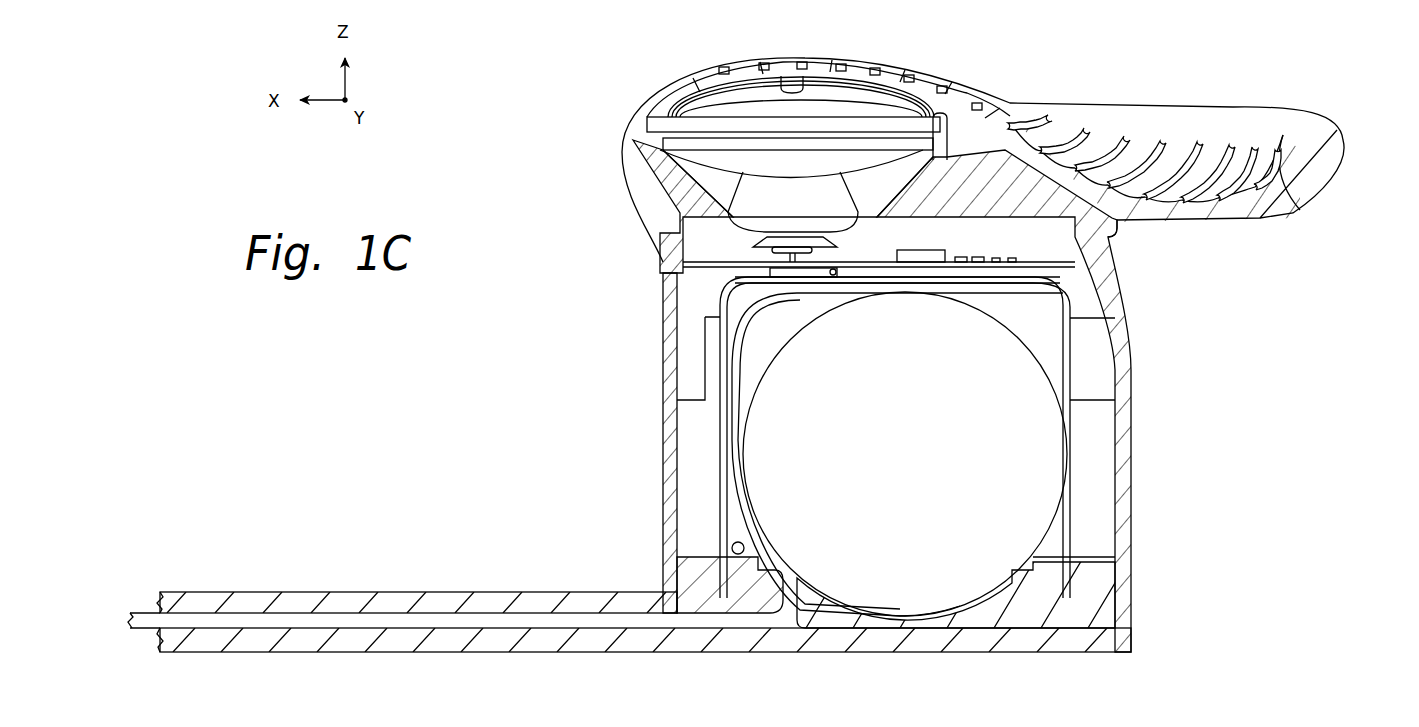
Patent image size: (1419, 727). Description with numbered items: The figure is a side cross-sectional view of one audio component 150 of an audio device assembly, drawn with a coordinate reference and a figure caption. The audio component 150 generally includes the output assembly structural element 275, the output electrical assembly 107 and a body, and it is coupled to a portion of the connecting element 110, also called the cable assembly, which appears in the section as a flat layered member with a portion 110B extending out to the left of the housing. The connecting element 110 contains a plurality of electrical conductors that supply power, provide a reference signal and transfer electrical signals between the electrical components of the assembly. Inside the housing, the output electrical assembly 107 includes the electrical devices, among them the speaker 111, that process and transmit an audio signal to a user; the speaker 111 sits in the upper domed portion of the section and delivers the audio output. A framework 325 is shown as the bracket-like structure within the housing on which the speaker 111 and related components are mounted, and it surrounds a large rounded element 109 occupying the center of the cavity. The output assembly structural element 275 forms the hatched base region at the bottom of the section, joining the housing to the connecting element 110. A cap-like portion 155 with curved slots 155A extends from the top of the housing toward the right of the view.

The audio component 150 is at (1003, 36).
The fin cap 155 is at (1313, 200).
The vent slots 155A is at (1142, 120).
The speaker 111 is at (760, 113).
The output electrical assembly 107 is at (957, 256).
The framework 325 is at (1073, 317).
The battery 109 is at (917, 455).
The output assembly structural element 275 is at (1122, 628).
The connecting element 110 is at (236, 535).
The base plate 110B is at (432, 573).